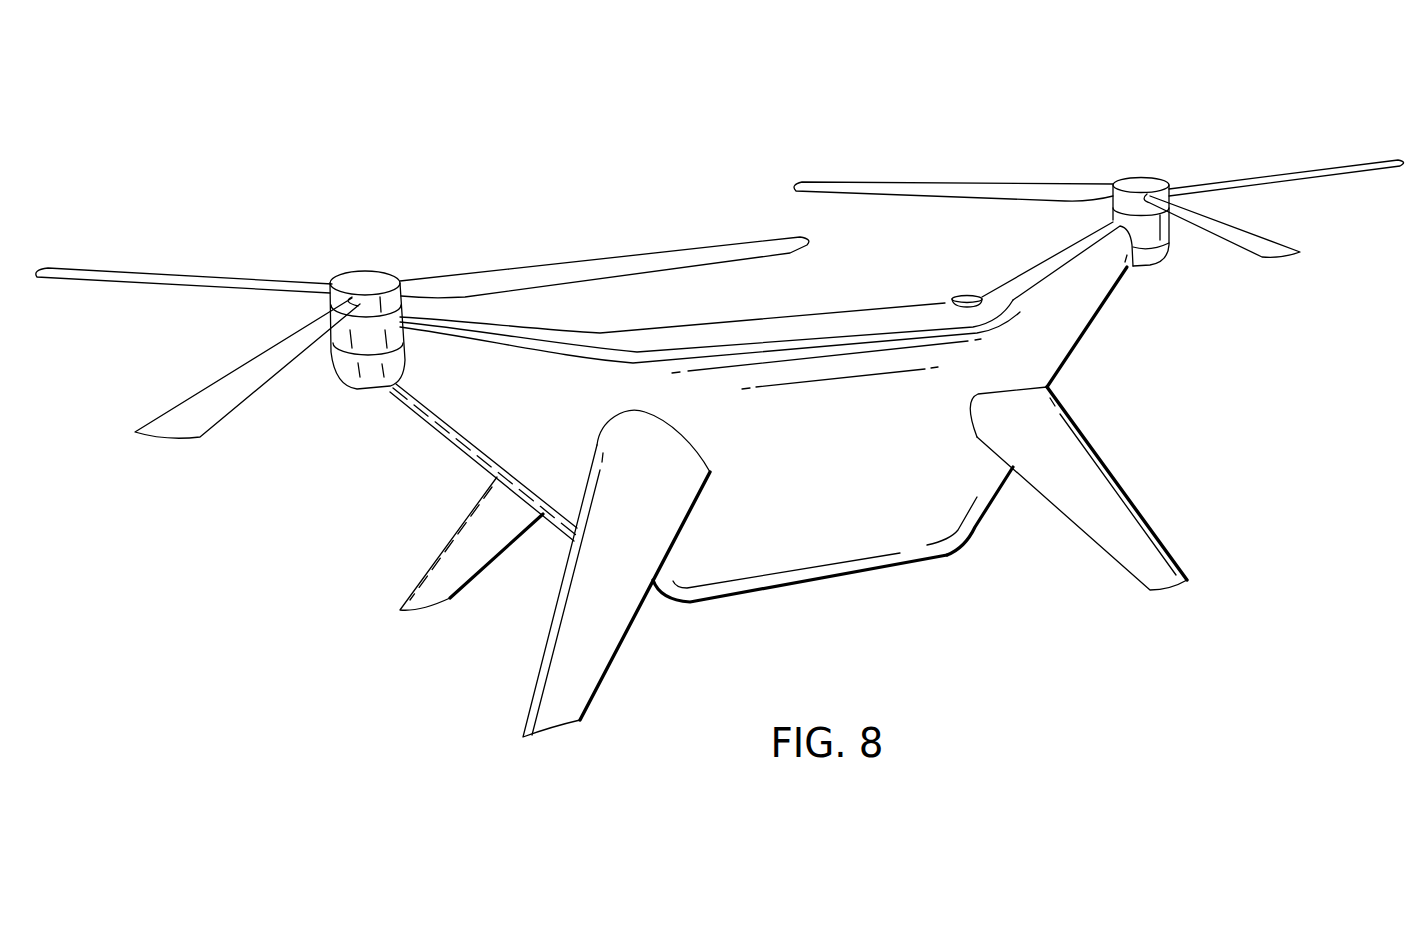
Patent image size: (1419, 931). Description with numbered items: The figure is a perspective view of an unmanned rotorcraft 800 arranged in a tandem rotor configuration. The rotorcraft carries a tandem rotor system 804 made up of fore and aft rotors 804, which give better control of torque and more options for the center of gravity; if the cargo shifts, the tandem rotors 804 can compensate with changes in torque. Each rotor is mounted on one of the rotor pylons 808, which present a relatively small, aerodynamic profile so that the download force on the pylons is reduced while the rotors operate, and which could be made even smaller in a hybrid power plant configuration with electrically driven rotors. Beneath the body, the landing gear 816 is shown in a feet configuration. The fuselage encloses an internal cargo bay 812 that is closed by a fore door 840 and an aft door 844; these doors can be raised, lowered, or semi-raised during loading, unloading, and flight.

The unmanned rotorcraft 800 is at (499, 137).
The tandem rotor system 804 is at (1157, 150).
The rotor pylons 808 is at (400, 387).
The internal cargo bay 812 is at (895, 567).
The landing gear 816 is at (577, 723).
The fore door 840 is at (480, 468).
The aft door 844 is at (987, 515).